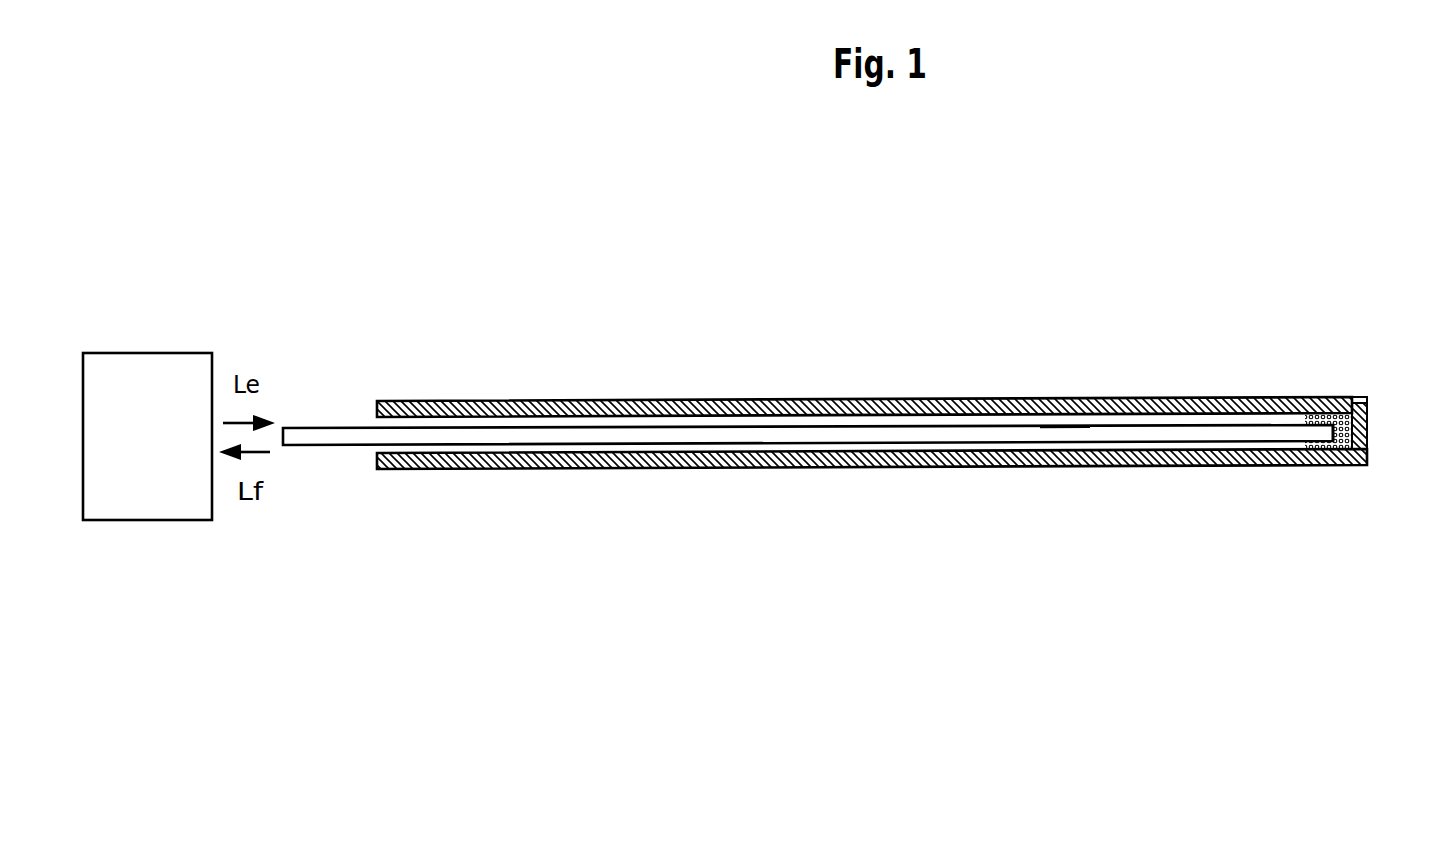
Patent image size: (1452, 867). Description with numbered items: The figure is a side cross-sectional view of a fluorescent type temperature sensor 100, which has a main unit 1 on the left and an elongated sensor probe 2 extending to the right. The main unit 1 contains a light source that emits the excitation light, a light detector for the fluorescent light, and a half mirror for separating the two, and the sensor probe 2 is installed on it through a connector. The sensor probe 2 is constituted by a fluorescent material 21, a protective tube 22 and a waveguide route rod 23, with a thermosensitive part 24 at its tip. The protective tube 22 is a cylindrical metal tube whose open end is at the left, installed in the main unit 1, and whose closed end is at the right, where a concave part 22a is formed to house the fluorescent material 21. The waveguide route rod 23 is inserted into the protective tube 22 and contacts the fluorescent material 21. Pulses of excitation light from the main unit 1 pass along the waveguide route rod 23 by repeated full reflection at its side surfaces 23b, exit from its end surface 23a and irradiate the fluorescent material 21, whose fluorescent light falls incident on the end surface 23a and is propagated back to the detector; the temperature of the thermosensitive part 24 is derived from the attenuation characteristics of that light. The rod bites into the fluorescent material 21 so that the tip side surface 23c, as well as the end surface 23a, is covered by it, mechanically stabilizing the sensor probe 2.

The temperature sensor 100 is at (217, 217).
The main unit 1 is at (184, 360).
The sensor probe 2 is at (1103, 255).
The fluorescent material 21 is at (1346, 458).
The protective tube 22 is at (1121, 399).
The concave part 22a is at (1368, 412).
The waveguide route rod 23 is at (1036, 446).
The end surface 23a is at (1367, 445).
The side surfaces 23b is at (1065, 426).
The tip side surface 23c is at (1314, 455).
The thermosensitive part 24 is at (1365, 387).